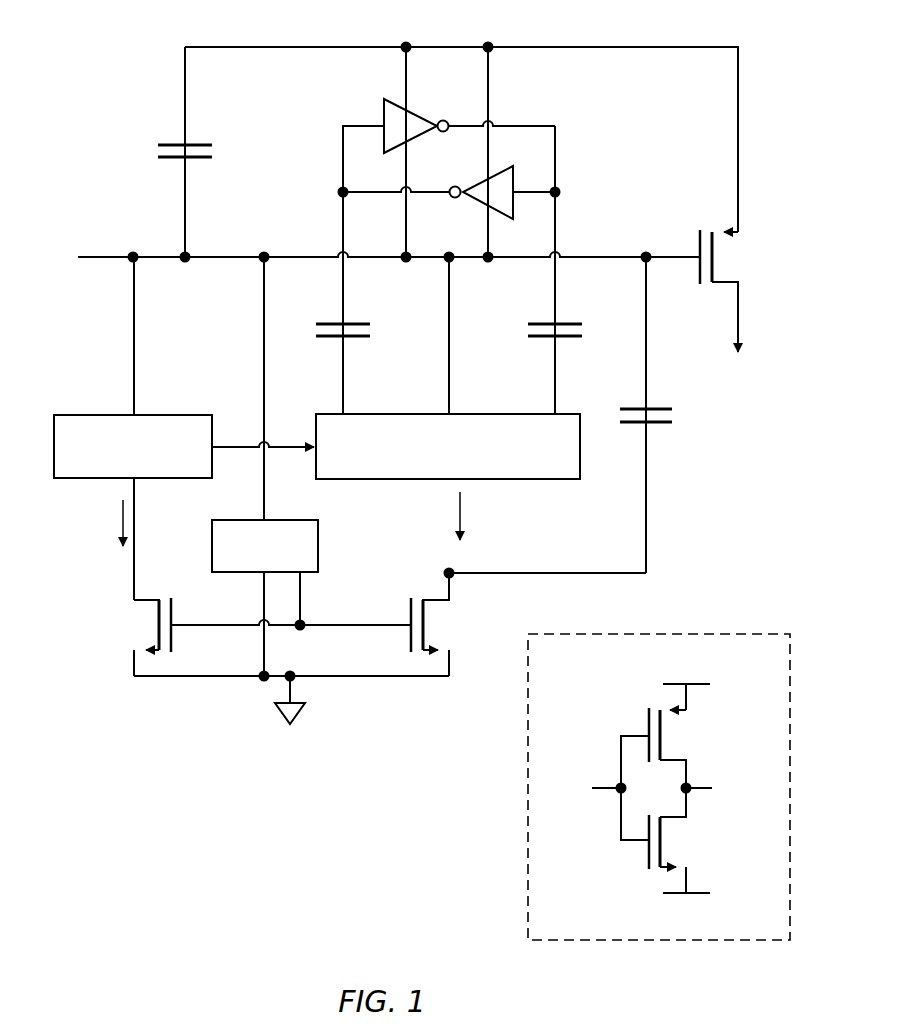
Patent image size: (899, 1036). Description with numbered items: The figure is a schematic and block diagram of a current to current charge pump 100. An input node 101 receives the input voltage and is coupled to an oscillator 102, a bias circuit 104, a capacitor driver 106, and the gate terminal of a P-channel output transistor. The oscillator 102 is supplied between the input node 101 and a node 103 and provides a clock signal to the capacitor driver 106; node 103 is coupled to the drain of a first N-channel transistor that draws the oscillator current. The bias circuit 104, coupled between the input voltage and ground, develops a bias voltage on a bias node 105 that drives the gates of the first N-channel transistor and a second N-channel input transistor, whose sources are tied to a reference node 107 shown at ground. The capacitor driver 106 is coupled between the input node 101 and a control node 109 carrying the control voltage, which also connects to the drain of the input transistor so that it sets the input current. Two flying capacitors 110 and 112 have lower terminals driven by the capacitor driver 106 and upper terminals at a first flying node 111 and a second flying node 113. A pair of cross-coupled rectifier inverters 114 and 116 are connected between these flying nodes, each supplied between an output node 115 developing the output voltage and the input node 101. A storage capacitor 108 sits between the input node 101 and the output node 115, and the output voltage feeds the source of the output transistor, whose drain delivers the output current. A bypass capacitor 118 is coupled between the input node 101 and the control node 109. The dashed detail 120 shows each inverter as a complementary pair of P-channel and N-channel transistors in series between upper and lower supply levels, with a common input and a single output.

The current to current charge pump 100 is at (197, 815).
The input node 101 is at (133, 250).
The oscillator 102 is at (92, 414).
The node 103 is at (133, 580).
The bias circuit 104 is at (212, 539).
The bias node 105 is at (303, 630).
The capacitor driver 106 is at (415, 480).
The reference node 107 is at (261, 681).
The storage capacitor 108 is at (163, 139).
The control node 109 is at (444, 572).
The flying capacitor 110 is at (359, 337).
The first flying node 111 is at (340, 188).
The flying capacitor 112 is at (535, 337).
The second flying node 113 is at (558, 188).
The rectifier inverter 114 is at (381, 107).
The output node 115 is at (484, 44).
The rectifier inverter 116 is at (480, 202).
The bypass capacitor 118 is at (668, 426).
The exemplary inverter configuration 120 is at (527, 785).